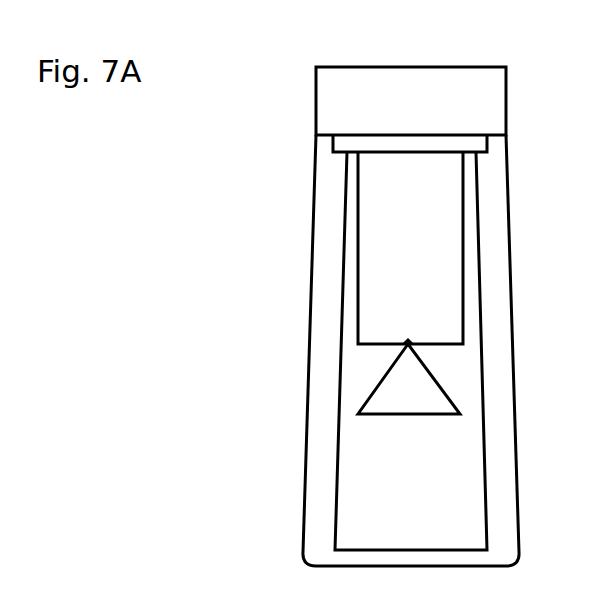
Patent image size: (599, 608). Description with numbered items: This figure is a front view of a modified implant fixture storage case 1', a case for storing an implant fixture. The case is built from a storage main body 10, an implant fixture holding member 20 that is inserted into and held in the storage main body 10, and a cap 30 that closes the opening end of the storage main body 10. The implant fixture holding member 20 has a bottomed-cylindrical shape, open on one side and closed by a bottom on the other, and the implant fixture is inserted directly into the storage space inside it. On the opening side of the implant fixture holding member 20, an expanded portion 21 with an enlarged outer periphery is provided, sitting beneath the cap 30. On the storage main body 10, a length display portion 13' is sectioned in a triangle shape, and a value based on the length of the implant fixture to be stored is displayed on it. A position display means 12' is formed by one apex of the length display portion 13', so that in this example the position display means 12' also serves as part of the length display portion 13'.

The implant fixture storage case 1' is at (406, 25).
The cap 30 is at (300, 70).
The expanded portion 21 is at (347, 141).
The storage main body 10 is at (257, 312).
The implant fixture holding member 20 is at (367, 267).
The length display portion 13' is at (361, 381).
The position display means 12' is at (487, 310).